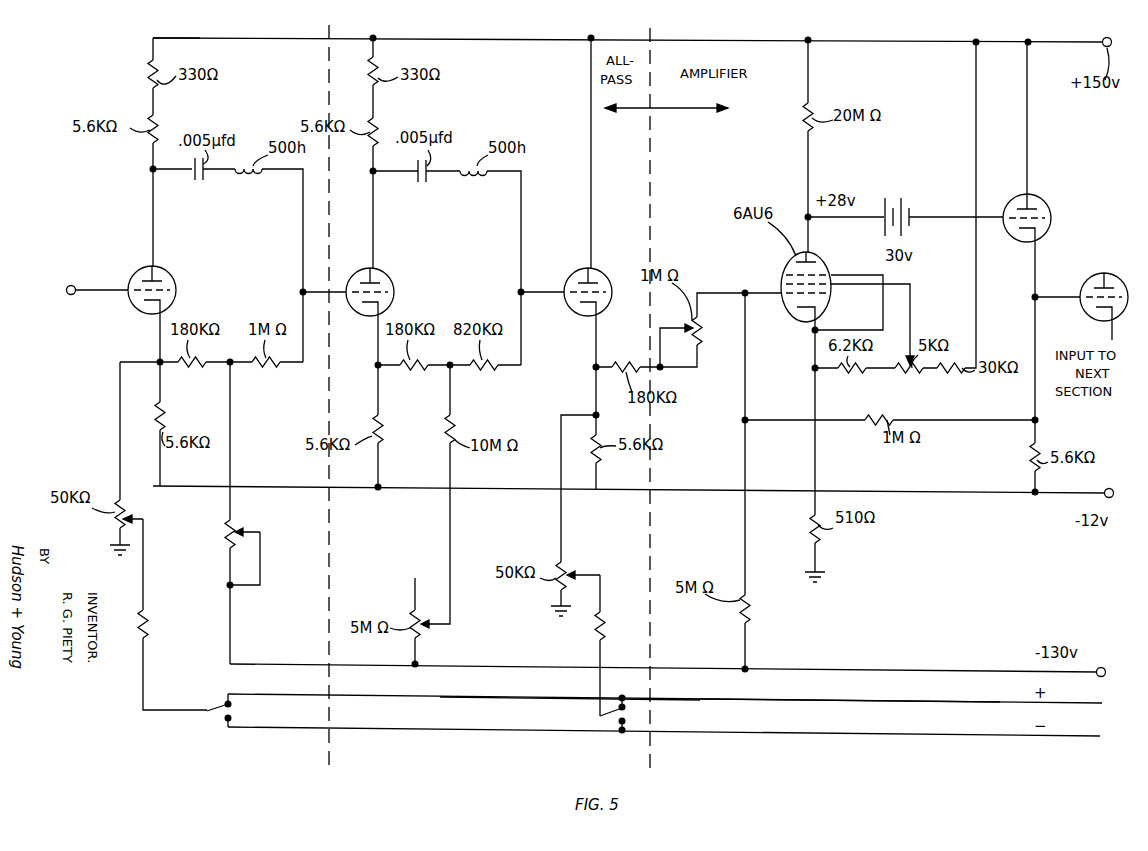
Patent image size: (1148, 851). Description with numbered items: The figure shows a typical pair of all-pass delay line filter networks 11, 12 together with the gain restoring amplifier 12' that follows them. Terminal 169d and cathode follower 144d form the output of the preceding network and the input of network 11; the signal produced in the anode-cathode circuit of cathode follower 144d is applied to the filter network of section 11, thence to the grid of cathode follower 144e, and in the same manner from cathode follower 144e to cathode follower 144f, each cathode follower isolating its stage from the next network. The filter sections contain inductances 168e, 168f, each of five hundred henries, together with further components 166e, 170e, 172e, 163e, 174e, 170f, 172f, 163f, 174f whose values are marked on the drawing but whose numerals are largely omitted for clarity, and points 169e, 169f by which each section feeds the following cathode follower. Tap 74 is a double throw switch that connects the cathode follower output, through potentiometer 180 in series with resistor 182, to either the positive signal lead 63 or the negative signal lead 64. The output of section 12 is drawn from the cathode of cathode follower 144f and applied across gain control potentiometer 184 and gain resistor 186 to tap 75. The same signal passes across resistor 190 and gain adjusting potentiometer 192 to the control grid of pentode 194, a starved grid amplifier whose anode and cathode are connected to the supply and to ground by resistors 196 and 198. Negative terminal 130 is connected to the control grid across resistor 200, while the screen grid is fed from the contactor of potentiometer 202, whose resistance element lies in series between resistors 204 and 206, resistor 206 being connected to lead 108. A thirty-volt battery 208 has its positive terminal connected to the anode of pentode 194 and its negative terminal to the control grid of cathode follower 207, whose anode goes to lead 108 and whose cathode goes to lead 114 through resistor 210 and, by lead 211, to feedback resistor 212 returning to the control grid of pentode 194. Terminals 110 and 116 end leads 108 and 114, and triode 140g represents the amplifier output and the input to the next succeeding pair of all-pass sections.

The delay line filter network 11 is at (142, 41).
The lead 108 is at (908, 44).
The +150v terminal 110 is at (1103, 45).
The cathode follower 144d is at (134, 268).
The terminal 169d is at (67, 287).
The capacitor .005 ufd 166e is at (198, 180).
The inductance 168e is at (250, 172).
The junction to next stage 169e is at (298, 290).
The 180K resistor 170e is at (190, 368).
The 1M resistor 172e is at (266, 368).
The 5.6K cathode resistor 163e is at (163, 416).
The potentiometer 180 is at (124, 514).
The resistor 182 is at (146, 628).
The tap 74 is at (226, 706).
The potentiometer 174e is at (234, 530).
The negative terminal 130 is at (228, 666).
The positive signal lead 63 is at (440, 698).
The negative signal lead 64 is at (440, 733).
The delay line filter network 12 is at (570, 733).
The amplifier 12' is at (850, 737).
The inductance 168f is at (476, 174).
The cathode follower 144e is at (349, 272).
The junction to next stage 169f is at (517, 290).
The 180K resistor 170f is at (414, 370).
The 820K resistor 172f is at (488, 370).
The 5.6K cathode resistor 163f is at (372, 420).
The 5M potentiometer 174f is at (410, 618).
The cathode follower 144f is at (568, 272).
The resistor 190 is at (626, 365).
The gain adjusting potentiometer 192 is at (658, 332).
The feedback resistor 212 is at (700, 336).
The gain or amplitude control potentiometer 184 is at (562, 568).
The gain resistor 186 is at (603, 636).
The tap 75 is at (626, 712).
The resistor 196 is at (805, 122).
The thirty volt battery 208 is at (893, 205).
The pentode 194 is at (788, 268).
The resistor 198 is at (819, 547).
The resistor 204 is at (848, 374).
The potentiometer 202 is at (908, 374).
The resistor 206 is at (950, 374).
The lead 211 is at (985, 422).
The resistor 200 is at (742, 613).
The cathode follower 207 is at (1048, 200).
The resistor 210 is at (1037, 450).
The triode 140g is at (1105, 273).
The lead 114 is at (1000, 495).
The -12v terminal 116 is at (1108, 500).